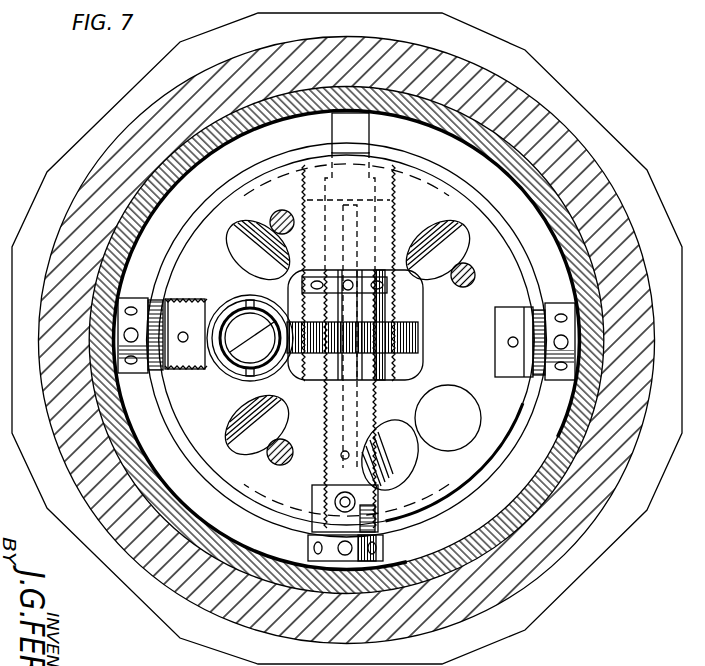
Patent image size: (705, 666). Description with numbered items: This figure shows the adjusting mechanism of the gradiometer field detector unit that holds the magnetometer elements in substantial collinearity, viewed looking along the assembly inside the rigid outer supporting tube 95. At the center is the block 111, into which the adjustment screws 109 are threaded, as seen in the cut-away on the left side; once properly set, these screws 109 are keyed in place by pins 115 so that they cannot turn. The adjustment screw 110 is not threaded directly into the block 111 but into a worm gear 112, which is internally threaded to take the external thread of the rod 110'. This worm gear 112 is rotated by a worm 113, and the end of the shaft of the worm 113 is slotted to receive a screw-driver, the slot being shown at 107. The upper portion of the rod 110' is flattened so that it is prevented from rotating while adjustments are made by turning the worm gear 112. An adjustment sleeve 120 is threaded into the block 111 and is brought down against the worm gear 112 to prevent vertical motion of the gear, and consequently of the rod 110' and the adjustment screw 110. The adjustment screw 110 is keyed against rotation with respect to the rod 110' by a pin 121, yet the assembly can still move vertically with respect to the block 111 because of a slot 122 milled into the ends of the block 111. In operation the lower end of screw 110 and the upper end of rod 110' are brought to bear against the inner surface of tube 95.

The outer supporting tube 95 is at (346, 340).
The adjustment screw 107 is at (245, 352).
The adjustment screws 109 is at (140, 375).
The adjustment screw 110 is at (326, 548).
The rod 110' is at (371, 133).
The block 111 is at (347, 340).
The worm gear 112 is at (394, 380).
The worm 113 is at (224, 300).
The pins 115 is at (183, 343).
The adjustment sleeve 120 is at (392, 282).
The pin 121 is at (312, 497).
The slot 122 is at (366, 495).